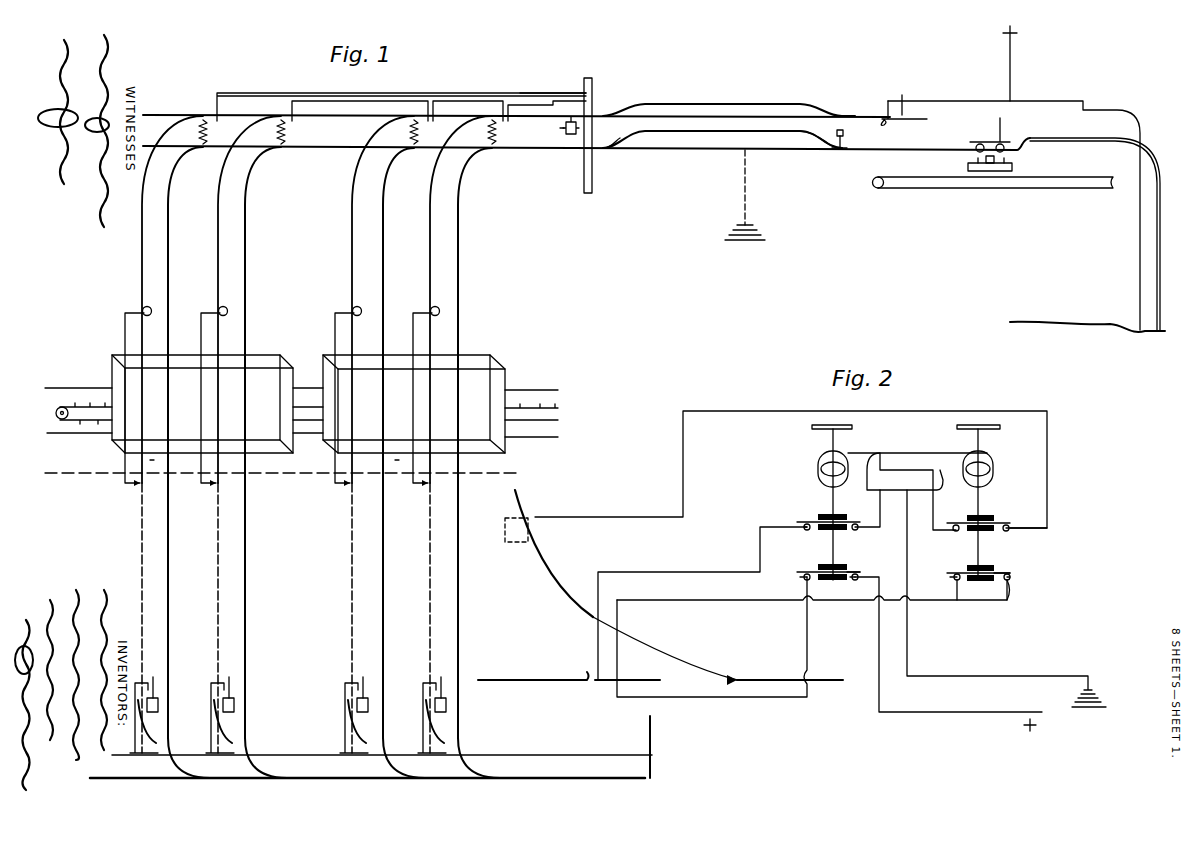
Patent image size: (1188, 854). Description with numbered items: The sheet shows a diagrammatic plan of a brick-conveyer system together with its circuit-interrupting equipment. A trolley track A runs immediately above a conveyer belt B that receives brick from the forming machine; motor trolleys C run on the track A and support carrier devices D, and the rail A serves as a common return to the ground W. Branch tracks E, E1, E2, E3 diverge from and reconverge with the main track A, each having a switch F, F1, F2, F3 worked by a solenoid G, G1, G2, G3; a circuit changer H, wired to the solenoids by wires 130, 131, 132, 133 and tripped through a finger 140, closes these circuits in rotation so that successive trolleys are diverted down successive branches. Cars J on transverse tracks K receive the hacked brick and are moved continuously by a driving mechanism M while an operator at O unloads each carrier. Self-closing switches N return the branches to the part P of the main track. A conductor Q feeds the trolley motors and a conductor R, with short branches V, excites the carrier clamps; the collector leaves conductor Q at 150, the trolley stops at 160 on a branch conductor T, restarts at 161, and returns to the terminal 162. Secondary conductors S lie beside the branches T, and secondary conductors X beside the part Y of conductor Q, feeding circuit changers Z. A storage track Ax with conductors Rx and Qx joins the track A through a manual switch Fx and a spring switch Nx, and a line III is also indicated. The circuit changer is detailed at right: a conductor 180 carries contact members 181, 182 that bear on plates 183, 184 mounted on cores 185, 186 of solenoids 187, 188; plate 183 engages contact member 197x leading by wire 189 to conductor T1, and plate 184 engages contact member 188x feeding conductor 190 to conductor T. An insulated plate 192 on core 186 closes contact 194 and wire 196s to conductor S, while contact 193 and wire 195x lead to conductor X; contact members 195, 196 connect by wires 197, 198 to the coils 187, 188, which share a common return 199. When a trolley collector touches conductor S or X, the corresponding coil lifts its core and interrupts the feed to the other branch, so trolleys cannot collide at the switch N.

In FIG. 1, the wire 130 is at (560, 86).
In FIG. 1, the wire 131 is at (518, 94).
In FIG. 1, the wire 132 is at (477, 100).
In FIG. 1, the wire 133 is at (423, 92).
In FIG. 1, the upstanding finger 140 is at (568, 135).
In FIG. 1, the part of conductor Q 150 is at (1083, 100).
In FIG. 1, the point on conductor T 160 is at (150, 307).
In FIG. 1, the part of conductor T 161 is at (138, 486).
In FIG. 1, the terminal 162 is at (1086, 125).
In FIG. 1, the trolley track A is at (872, 150).
In FIG. 1, the storage track Ax is at (693, 150).
In FIG. 1, the conveyer belt B is at (1052, 178).
In FIG. 1, the motor trolley C is at (988, 136).
In FIG. 1, the carrier device D is at (968, 167).
In FIG. 1, the branch track E is at (463, 231).
In FIG. 1, the branch track E1 is at (386, 231).
In FIG. 1, the branch track E2 is at (248, 231).
In FIG. 1, the branch track E3 is at (172, 231).
In FIG. 1, the switch F is at (470, 157).
In FIG. 1, the switch F1 is at (392, 157).
In FIG. 1, the switch F2 is at (260, 157).
In FIG. 1, the switch F3 is at (182, 157).
In FIG. 1, the manually operated switch Fx is at (825, 150).
In FIG. 1, the switch operating means G is at (497, 131).
In FIG. 1, the switch operating means G1 is at (420, 131).
In FIG. 1, the switch operating means G2 is at (287, 130).
In FIG. 1, the switch operating means G3 is at (208, 130).
In FIG. 1, the circuit changer H is at (563, 131).
In FIG. 1, the car J is at (286, 362).
In FIG. 1, the track K is at (540, 437).
In FIG. 1, the driving mechanism M is at (560, 408).
In FIG. 1, the self-closing switch N is at (518, 735).
In FIG. 1, the spring switch Nx is at (612, 150).
In FIG. 1, the operator's position O is at (277, 463).
In FIG. 1, the part of main track P is at (490, 785).
In FIG. 1, the electrical conductor Q is at (848, 125).
In FIG. 1, the conductor Qx is at (712, 105).
In FIG. 1, the conductor R is at (858, 116).
In FIG. 1, the conductor Rx is at (655, 103).
In FIG. 1, the secondary conductor S is at (162, 722).
In FIG. 1, the branch of conductor Q T is at (143, 583).
In FIG. 1, the conductor T1 is at (523, 680).
In FIG. 1, the short branch of conductor R V is at (132, 350).
In FIG. 1, the ground W is at (756, 256).
In FIG. 1, the secondary conductor X is at (571, 176).
In FIG. 1, the part of conductor Q Y is at (648, 750).
In FIG. 1, the circuit changer Z is at (153, 677).
In FIG. 1, the section line III is at (92, 470).
In FIG. 2, the conductor 180 is at (928, 712).
In FIG. 2, the contact member 181 is at (866, 591).
In FIG. 2, the contact member 182 is at (957, 580).
In FIG. 2, the plate 183 is at (858, 561).
In FIG. 2, the plate 184 is at (967, 570).
In FIG. 2, the core 185 is at (833, 567).
In FIG. 2, the core 186 is at (982, 555).
In FIG. 2, the solenoid 187 is at (818, 455).
In FIG. 2, the solenoid 188 is at (993, 456).
In FIG. 2, the contact member 188x is at (1010, 581).
In FIG. 2, the wire 189 is at (807, 640).
In FIG. 2, the conductor 190 is at (940, 603).
In FIG. 2, the plate 192 is at (1006, 525).
In FIG. 2, the contact 193 is at (805, 531).
In FIG. 2, the contact 194 is at (1038, 545).
In FIG. 2, the contact member 195 is at (866, 530).
In FIG. 2, the wire 195x is at (706, 572).
In FIG. 2, the contact member 196 is at (954, 532).
In FIG. 2, the wire 196s is at (684, 470).
In FIG. 2, the wire 197 is at (800, 520).
In FIG. 2, the contact member 197x is at (804, 580).
In FIG. 2, the wire 198 is at (935, 518).
In FIG. 2, the common return conductor 199 is at (940, 676).